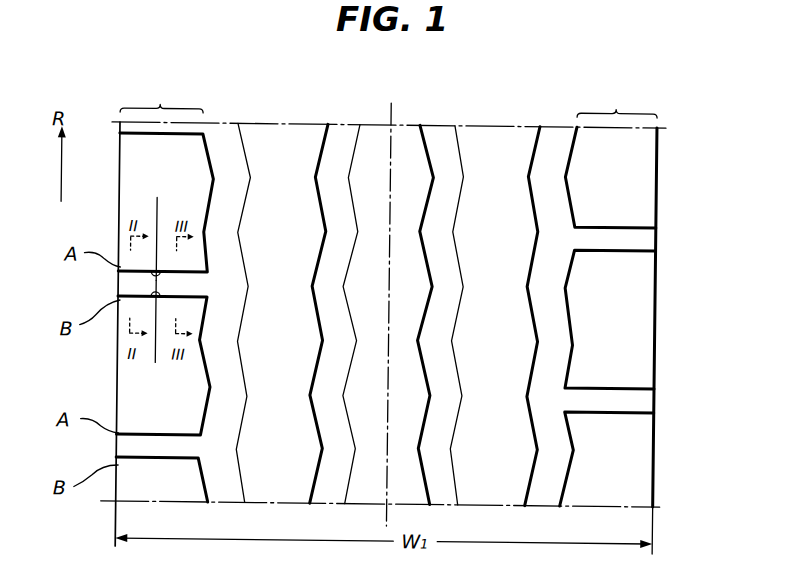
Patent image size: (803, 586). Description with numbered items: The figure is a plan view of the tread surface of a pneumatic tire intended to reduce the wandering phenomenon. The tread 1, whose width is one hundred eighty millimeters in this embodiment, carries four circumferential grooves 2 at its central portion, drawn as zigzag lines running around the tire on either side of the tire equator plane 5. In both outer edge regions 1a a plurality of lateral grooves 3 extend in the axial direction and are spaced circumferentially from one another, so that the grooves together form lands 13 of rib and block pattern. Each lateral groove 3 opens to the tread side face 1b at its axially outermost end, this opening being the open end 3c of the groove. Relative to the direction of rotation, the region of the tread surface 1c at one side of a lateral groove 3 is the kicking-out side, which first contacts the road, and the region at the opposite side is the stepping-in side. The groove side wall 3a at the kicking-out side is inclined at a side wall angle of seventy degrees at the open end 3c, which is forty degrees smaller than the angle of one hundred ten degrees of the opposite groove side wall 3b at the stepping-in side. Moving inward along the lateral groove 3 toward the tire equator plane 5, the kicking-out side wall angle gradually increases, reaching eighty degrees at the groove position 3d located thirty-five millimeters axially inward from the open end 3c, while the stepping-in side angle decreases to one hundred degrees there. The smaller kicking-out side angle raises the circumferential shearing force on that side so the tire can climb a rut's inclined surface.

The tread 1 is at (500, 133).
The outer edge regions of the tread 1a is at (388, 97).
The tread side face 1b is at (123, 167).
The tread surface 1c is at (122, 381).
The circumferential grooves 2 is at (331, 136).
The lateral grooves 3 is at (122, 445).
The groove side wall at the kicking-out side 3a is at (153, 227).
The groove side wall at the stepping-in side 3b is at (152, 335).
The open end of the lateral groove 3c is at (122, 287).
The groove position axially inward of the open end 3d is at (200, 285).
The tire equator plane 5 is at (390, 118).
The lands 13 is at (625, 457).